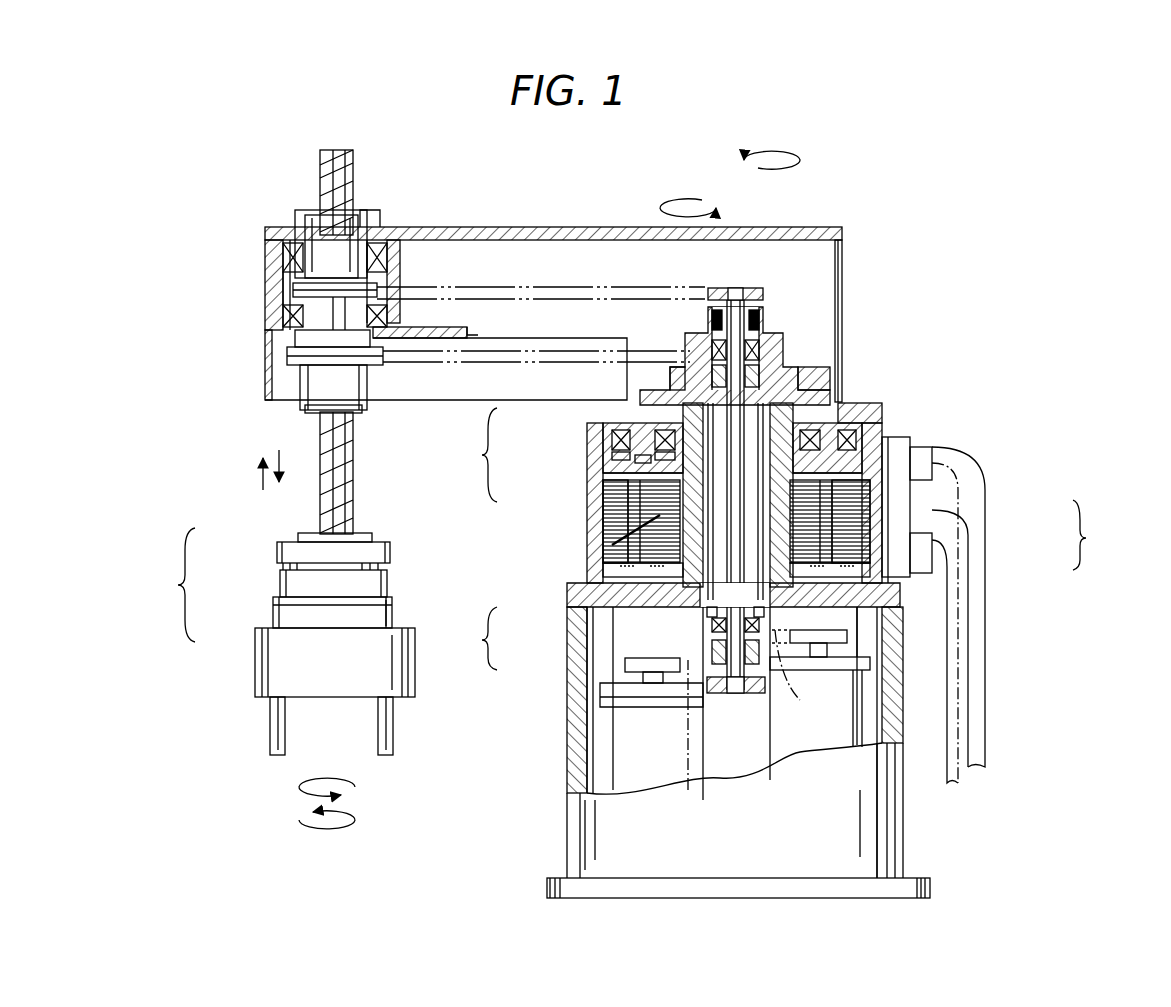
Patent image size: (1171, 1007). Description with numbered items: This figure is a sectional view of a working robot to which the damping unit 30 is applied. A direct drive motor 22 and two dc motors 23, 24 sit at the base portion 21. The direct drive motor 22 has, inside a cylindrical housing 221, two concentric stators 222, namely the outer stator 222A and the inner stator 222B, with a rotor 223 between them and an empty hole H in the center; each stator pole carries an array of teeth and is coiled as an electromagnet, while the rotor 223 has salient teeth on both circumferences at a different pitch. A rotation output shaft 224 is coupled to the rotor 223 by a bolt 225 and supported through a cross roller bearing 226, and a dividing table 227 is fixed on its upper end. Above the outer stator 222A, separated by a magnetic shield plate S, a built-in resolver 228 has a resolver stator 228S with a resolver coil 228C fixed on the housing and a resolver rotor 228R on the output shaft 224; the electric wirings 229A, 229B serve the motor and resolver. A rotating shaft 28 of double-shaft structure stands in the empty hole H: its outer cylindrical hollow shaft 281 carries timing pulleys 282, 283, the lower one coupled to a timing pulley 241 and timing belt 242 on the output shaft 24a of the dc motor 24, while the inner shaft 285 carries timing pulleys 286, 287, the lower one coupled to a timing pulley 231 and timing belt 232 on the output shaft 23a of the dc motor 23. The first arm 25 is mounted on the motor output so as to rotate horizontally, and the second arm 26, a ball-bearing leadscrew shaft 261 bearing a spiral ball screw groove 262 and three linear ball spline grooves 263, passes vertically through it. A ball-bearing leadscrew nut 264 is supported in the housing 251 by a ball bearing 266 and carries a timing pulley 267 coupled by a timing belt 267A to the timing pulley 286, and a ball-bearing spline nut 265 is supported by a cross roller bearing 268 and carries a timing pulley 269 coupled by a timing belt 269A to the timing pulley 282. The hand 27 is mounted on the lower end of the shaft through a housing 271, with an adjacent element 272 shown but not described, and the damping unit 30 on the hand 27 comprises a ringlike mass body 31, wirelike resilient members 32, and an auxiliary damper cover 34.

The base portion 21 is at (560, 590).
The direct drive motor 22 is at (936, 440).
The cylindrical housing 221 is at (913, 452).
The cylindrical stators 222 is at (1097, 535).
The outer stator 222A is at (868, 507).
The inner stator 222B is at (877, 523).
The rotor 223 is at (885, 484).
The rotation output shaft 224 is at (852, 415).
The bolt 225 is at (908, 618).
The cross roller bearing 226 is at (847, 403).
The dividing table 227 is at (807, 387).
The built-in resolver 228 is at (920, 412).
The resolver coil 228C is at (606, 432).
The resolver stator 228S is at (608, 447).
The resolver rotor 228R is at (612, 470).
The electric wiring of the motor 229A is at (997, 740).
The electric wiring of the resolver 229B is at (987, 638).
The dc motor 23 is at (613, 763).
The output shaft of the dc motor 23a is at (655, 673).
The timing pulley 231 is at (668, 672).
The timing belt 232 is at (738, 723).
The dc motor 24 is at (845, 745).
The output shaft of the dc motor 24a is at (850, 690).
The timing pulley 241 is at (845, 618).
The timing belt 242 is at (813, 653).
The first arm 25 is at (830, 228).
The housing of the first arm 251 is at (268, 295).
The second arm 26 is at (352, 163).
The ball-bearing leadscrew shaft 261 is at (320, 170).
The spiral ball screw groove 262 is at (318, 205).
The linear ball spline grooves 263 is at (325, 190).
The ball-bearing leadscrew nut 264 is at (357, 228).
The ball-bearing spline nut 265 is at (310, 378).
The ball bearing 266 is at (270, 262).
The timing pulley 267 is at (368, 290).
The timing belt 267A is at (565, 282).
The cross roller bearing 268 is at (272, 320).
The timing pulley 269 is at (372, 360).
The timing belt 269A is at (578, 362).
The hand 27 is at (262, 680).
The housing 271 is at (370, 535).
The hand holder 272 is at (393, 613).
The rotating shaft 28 is at (477, 638).
The outer cylindrical hollow shaft 281 is at (653, 608).
The timing pulley 282 is at (760, 340).
The timing pulley 283 is at (705, 628).
The inner shaft 285 is at (703, 642).
The timing pulley 286 is at (745, 288).
The timing pulley 287 is at (712, 693).
The damping unit 30 is at (175, 596).
The ringlike mass body 31 is at (282, 553).
The wirelike resilient members 32 is at (282, 572).
The auxiliary damper cover 34 is at (278, 600).
The magnetic shield plate S is at (608, 474).
The empty hole H is at (603, 553).